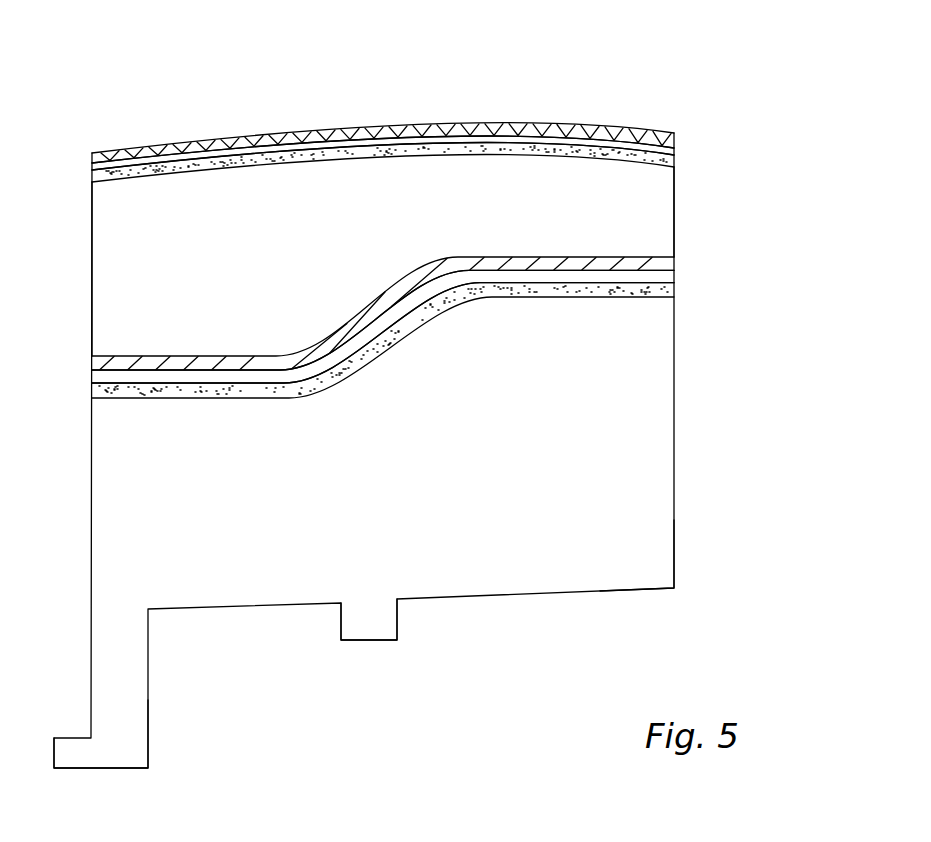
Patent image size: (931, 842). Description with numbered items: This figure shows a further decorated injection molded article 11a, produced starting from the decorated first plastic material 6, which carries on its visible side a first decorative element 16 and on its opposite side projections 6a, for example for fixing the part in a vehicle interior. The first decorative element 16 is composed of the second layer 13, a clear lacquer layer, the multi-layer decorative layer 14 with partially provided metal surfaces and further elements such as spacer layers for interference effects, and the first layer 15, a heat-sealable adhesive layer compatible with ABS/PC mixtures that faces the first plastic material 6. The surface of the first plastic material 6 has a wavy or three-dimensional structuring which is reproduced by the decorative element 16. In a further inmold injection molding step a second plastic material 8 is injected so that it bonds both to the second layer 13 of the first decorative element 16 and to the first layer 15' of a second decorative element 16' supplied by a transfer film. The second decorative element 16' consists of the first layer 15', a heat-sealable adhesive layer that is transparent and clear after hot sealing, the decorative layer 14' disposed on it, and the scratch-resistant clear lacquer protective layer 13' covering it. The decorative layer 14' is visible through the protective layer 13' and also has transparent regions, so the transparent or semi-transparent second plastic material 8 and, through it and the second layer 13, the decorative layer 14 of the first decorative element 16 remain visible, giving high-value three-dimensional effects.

The first plastic material 6 is at (636, 462).
The projections 6a is at (362, 624).
The second plastic material 8 is at (645, 203).
The decorated injection molded article 11a is at (676, 574).
The second layer 13 is at (427, 294).
The decorative layer 14 is at (443, 314).
The first layer 15 is at (420, 336).
The decorative element 16 is at (418, 310).
The protective layer 13' is at (383, 103).
The decorative layer 14' is at (383, 110).
The first layer 15' is at (440, 152).
The decorative element 16' is at (415, 115).